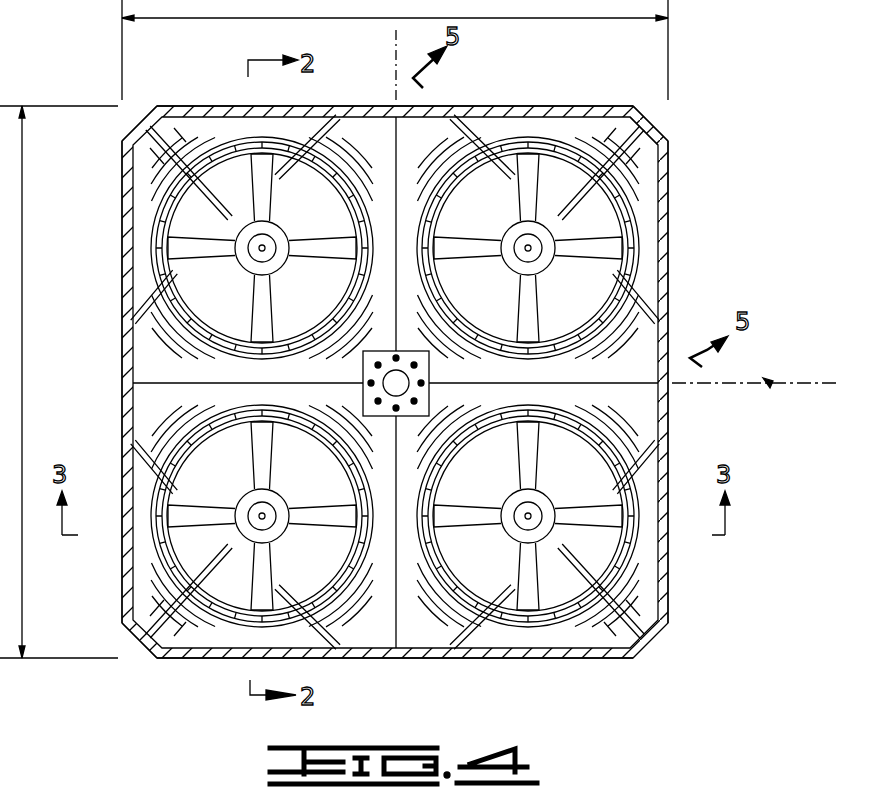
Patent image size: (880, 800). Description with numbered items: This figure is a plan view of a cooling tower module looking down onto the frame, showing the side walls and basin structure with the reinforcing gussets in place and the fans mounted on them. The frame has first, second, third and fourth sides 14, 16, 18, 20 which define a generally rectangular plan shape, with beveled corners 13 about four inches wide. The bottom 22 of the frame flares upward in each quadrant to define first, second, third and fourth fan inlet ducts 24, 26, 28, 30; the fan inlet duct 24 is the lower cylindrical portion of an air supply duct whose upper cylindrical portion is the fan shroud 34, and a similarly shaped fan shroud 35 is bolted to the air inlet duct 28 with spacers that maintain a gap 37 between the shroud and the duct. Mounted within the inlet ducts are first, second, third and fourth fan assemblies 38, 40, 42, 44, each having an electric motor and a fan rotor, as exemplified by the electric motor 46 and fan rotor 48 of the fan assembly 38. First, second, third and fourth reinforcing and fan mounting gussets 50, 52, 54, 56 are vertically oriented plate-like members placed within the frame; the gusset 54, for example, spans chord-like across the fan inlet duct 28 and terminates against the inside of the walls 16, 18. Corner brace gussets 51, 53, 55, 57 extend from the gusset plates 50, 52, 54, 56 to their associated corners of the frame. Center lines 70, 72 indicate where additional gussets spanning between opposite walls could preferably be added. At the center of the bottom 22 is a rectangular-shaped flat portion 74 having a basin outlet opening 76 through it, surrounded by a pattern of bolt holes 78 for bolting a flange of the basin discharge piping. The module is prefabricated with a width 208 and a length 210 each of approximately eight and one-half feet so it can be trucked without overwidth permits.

The beveled corners 13 is at (660, 122).
The first side 14 is at (578, 660).
The second side 16 is at (668, 413).
The third side 18 is at (528, 114).
The fourth side 20 is at (122, 240).
The bottom 22 is at (198, 634).
The first fan inlet duct 24 is at (235, 640).
The second fan inlet duct 26 is at (615, 580).
The third fan inlet duct 28 is at (630, 216).
The fourth fan inlet duct 30 is at (233, 147).
The fan shroud 34 is at (157, 537).
The fan shroud 35 is at (637, 233).
The gap 37 is at (640, 327).
The first fan assembly 38 is at (166, 557).
The second fan assembly 40 is at (548, 535).
The third fan assembly 42 is at (585, 205).
The fourth fan assembly 44 is at (253, 263).
The electric motor 46 is at (290, 535).
The fan rotor 48 is at (201, 516).
The first reinforcing/fan mounting gusset 50 is at (134, 452).
The corner brace gusset 51 is at (148, 658).
The second reinforcing/fan mounting gusset 52 is at (472, 632).
The corner brace gusset 53 is at (643, 623).
The third reinforcing/fan mounting gusset 54 is at (652, 300).
The corner brace gusset 55 is at (652, 141).
The fourth reinforcing/fan mounting gusset 56 is at (322, 128).
The corner brace gusset 57 is at (128, 164).
The center line 70 is at (393, 44).
The center line 72 is at (768, 385).
The rectangular-shaped flat portion 74 is at (379, 351).
The basin outlet opening 76 is at (388, 380).
The bolt holes 78 is at (420, 382).
The width 208 is at (386, 18).
The length 210 is at (25, 336).